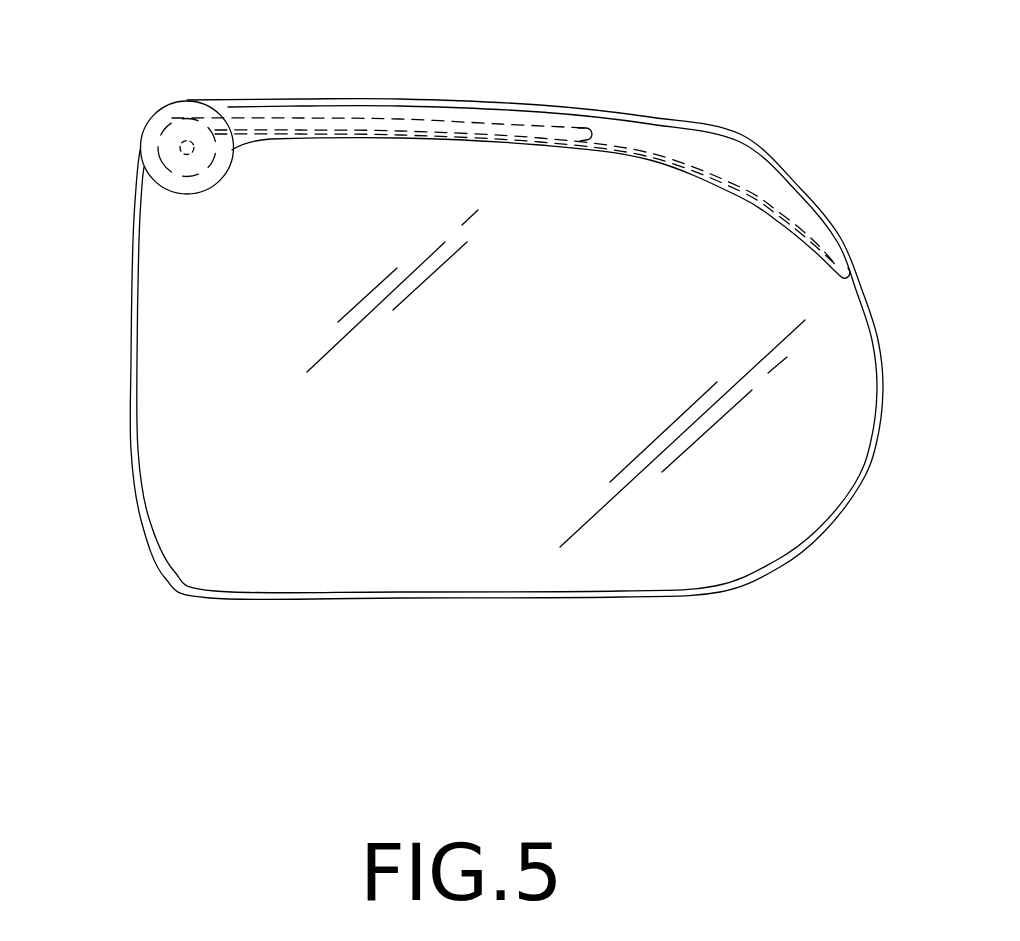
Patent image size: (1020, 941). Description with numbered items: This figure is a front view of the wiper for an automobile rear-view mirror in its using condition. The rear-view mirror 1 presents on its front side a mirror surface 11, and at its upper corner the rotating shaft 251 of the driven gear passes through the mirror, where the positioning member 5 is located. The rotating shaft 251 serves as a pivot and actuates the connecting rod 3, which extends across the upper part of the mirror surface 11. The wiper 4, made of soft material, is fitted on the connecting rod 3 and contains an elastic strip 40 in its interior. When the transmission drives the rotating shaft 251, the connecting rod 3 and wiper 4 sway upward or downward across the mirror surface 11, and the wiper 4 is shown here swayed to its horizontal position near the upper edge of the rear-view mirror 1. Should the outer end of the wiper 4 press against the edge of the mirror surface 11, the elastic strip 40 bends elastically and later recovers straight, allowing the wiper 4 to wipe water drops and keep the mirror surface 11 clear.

The rear-view mirror 1 is at (132, 382).
The mirror surface 11 is at (190, 523).
The connecting rod 3 is at (533, 120).
The wiper 4 is at (745, 168).
The elastic strip 40 is at (680, 163).
The positioning member 5 is at (148, 157).
The rotating shaft 251 is at (189, 140).